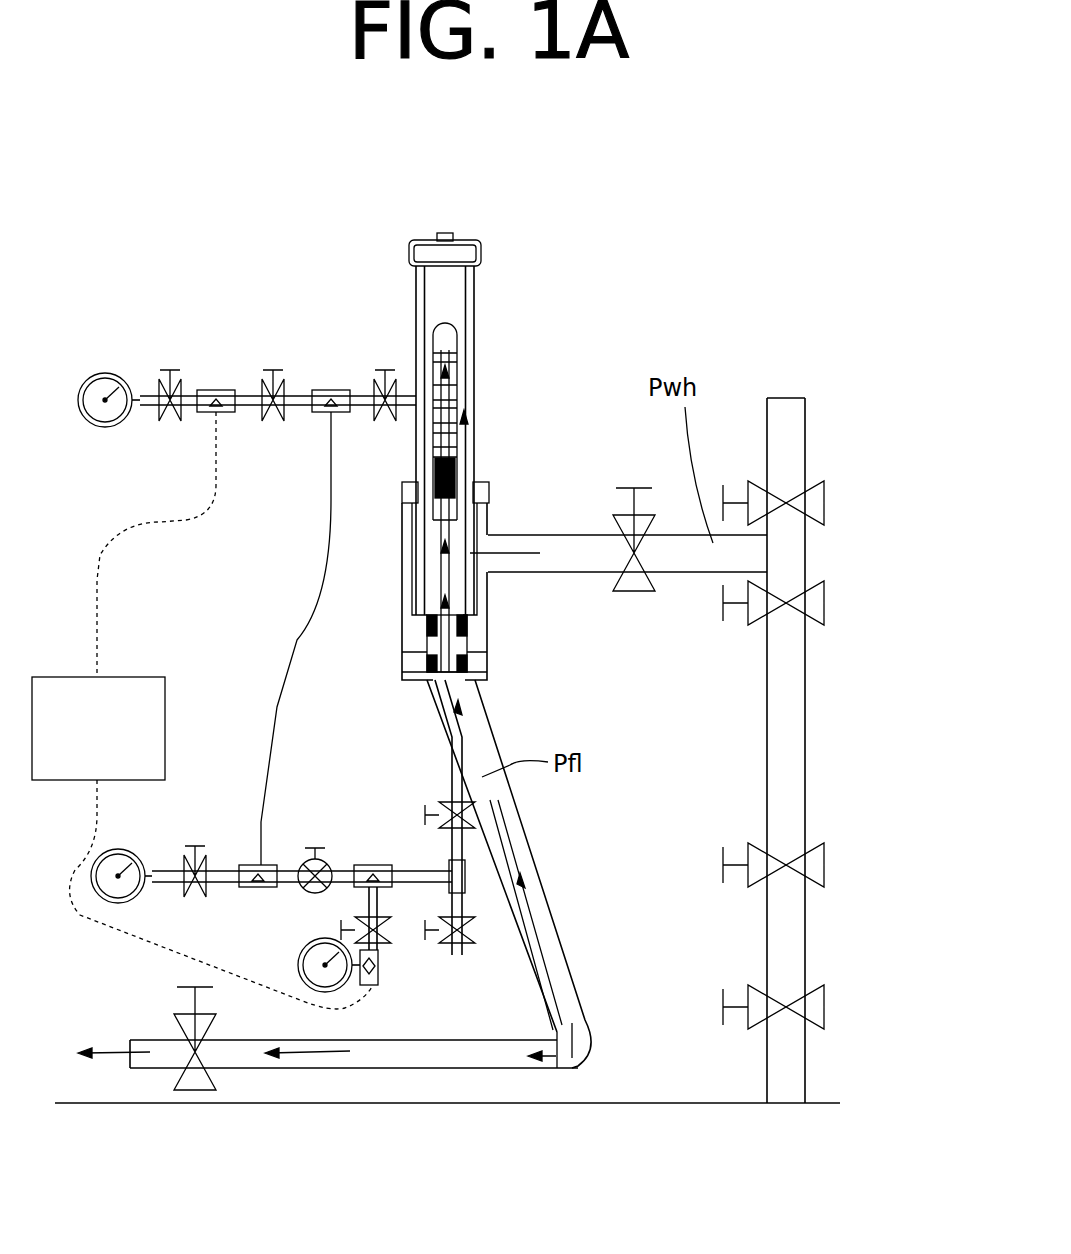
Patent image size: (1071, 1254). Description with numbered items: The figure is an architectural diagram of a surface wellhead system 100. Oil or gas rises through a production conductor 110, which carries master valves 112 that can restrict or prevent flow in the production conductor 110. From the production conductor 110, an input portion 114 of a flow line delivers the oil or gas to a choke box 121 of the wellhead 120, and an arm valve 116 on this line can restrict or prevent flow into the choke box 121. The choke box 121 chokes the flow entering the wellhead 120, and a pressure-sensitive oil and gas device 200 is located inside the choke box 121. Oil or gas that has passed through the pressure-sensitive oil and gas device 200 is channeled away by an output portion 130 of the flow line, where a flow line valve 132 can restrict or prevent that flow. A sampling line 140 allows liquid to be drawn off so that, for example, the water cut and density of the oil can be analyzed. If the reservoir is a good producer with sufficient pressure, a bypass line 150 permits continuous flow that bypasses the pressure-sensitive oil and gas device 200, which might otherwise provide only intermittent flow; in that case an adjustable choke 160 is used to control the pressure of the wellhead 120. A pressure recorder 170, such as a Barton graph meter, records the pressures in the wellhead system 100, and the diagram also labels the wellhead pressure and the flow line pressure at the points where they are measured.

The wellhead system 100 is at (148, 98).
The production conductor 110 is at (807, 706).
The master valves 112 is at (812, 492).
The input portion of a flow line 114 is at (682, 573).
The arm valve 116 is at (632, 590).
The wellhead 120 is at (615, 300).
The choke box 121 is at (492, 512).
The output portion of the flow line 130 is at (530, 861).
The flow line valve 132 is at (180, 1023).
The sampling line 140 is at (462, 946).
The bypass line 150 is at (277, 707).
The adjustable choke 160 is at (320, 862).
The pressure recorder 170 is at (202, 710).
The pressure-sensitive oil and gas device 200 is at (442, 406).